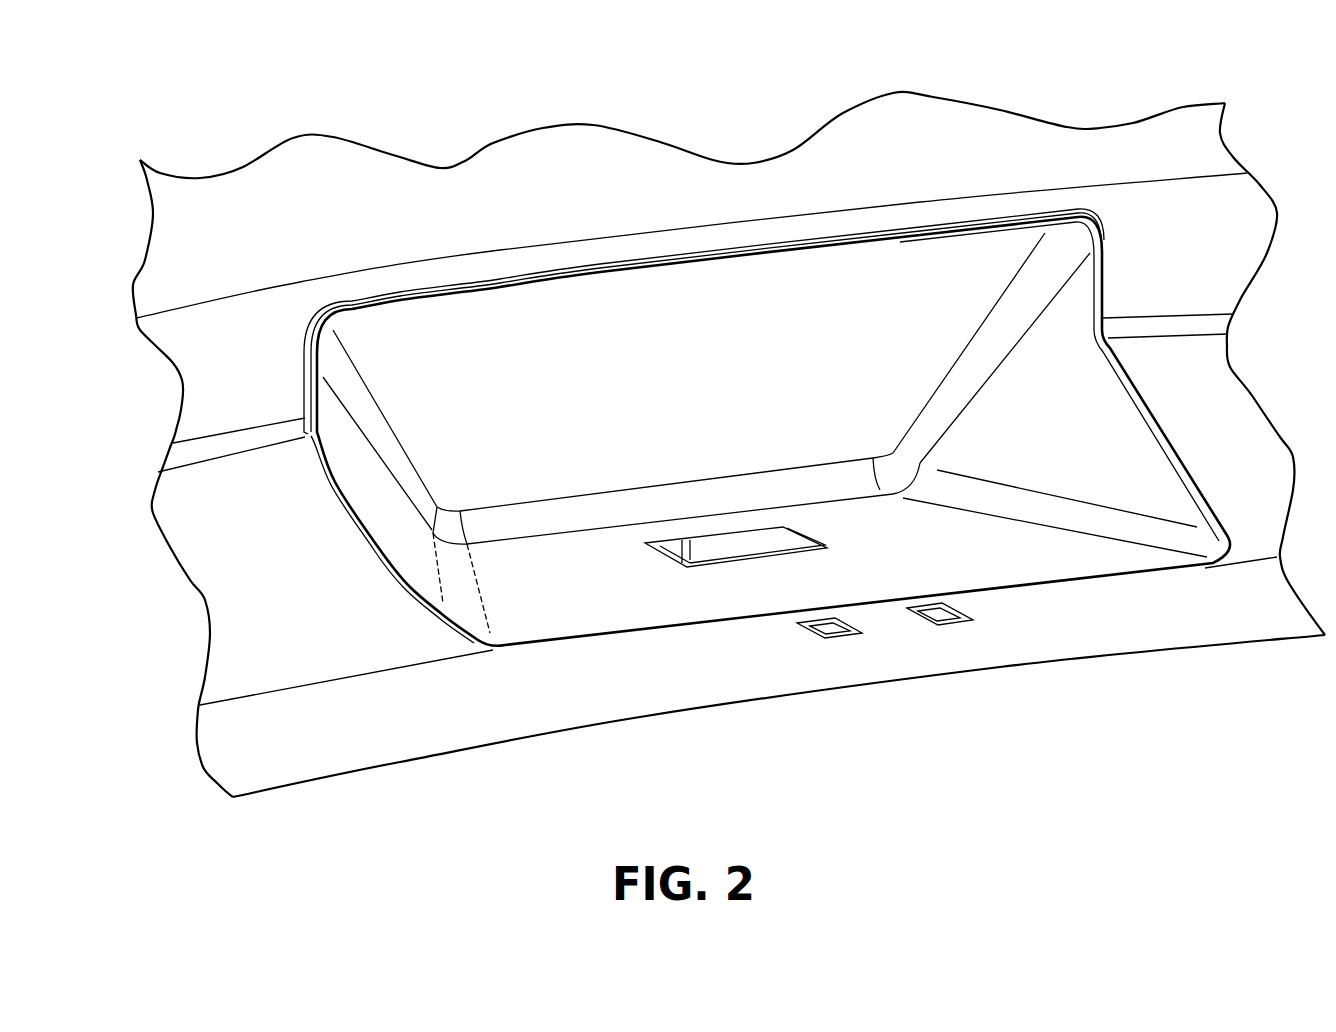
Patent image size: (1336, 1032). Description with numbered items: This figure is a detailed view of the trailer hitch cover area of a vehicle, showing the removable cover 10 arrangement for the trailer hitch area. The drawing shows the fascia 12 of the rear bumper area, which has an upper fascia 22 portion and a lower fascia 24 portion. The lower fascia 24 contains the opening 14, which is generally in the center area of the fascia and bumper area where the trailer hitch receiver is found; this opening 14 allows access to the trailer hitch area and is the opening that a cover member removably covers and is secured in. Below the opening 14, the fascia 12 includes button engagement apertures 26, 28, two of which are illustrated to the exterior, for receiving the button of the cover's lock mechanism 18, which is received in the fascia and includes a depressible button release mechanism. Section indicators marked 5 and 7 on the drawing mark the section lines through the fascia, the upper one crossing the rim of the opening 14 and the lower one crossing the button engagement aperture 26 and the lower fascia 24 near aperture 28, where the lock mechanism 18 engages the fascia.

The removable cover 10 is at (743, 313).
The fascia 12 is at (230, 343).
The opening 14 is at (1100, 287).
The lock mechanism 18 is at (942, 615).
The upper fascia 22 is at (345, 201).
The lower fascia 24 is at (274, 543).
The button engagement aperture 26 is at (820, 627).
The button engagement aperture 28 is at (942, 613).
The section line 5- 5 is at (655, 247).
The section line 7- 7 is at (900, 215).